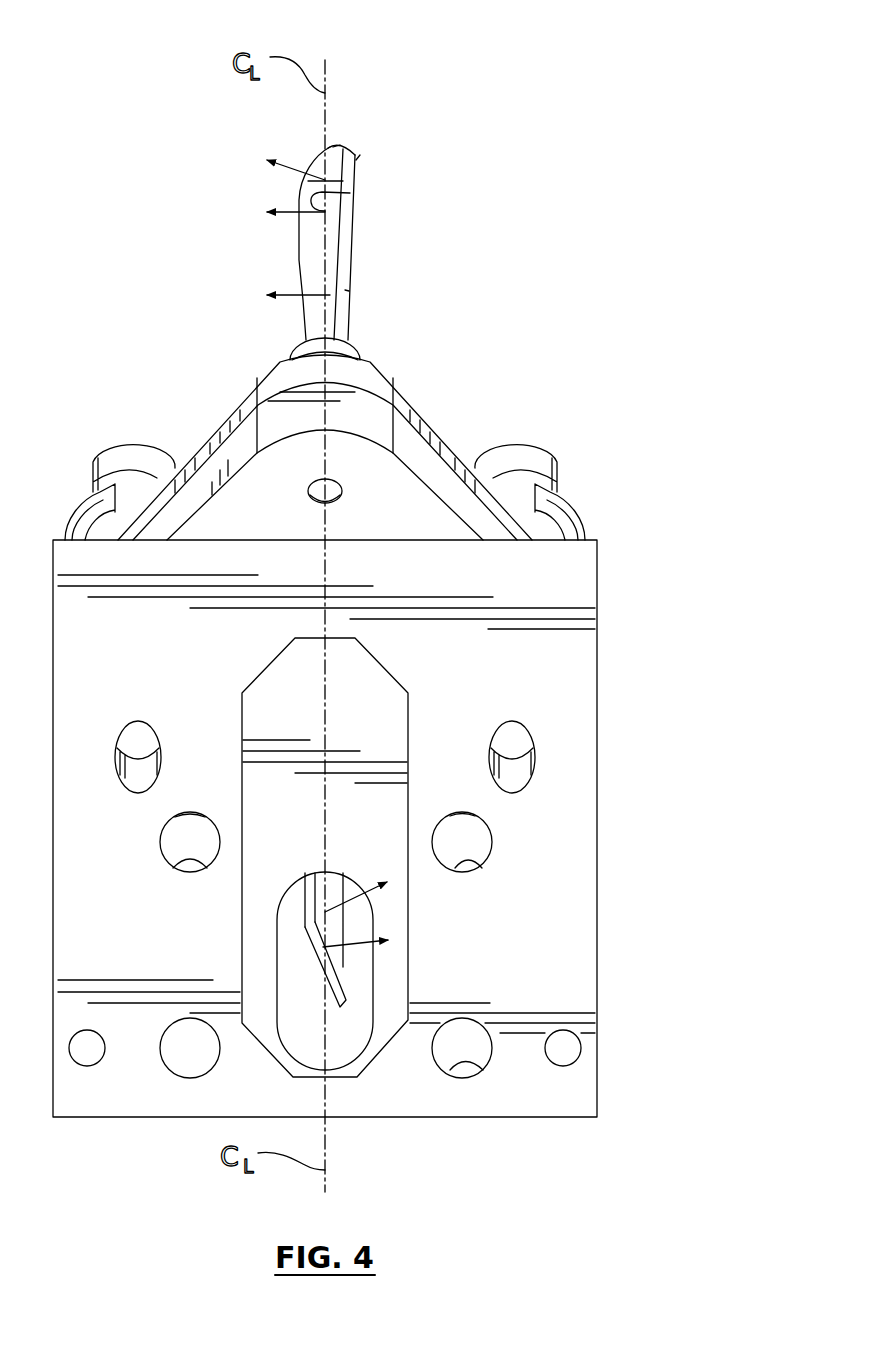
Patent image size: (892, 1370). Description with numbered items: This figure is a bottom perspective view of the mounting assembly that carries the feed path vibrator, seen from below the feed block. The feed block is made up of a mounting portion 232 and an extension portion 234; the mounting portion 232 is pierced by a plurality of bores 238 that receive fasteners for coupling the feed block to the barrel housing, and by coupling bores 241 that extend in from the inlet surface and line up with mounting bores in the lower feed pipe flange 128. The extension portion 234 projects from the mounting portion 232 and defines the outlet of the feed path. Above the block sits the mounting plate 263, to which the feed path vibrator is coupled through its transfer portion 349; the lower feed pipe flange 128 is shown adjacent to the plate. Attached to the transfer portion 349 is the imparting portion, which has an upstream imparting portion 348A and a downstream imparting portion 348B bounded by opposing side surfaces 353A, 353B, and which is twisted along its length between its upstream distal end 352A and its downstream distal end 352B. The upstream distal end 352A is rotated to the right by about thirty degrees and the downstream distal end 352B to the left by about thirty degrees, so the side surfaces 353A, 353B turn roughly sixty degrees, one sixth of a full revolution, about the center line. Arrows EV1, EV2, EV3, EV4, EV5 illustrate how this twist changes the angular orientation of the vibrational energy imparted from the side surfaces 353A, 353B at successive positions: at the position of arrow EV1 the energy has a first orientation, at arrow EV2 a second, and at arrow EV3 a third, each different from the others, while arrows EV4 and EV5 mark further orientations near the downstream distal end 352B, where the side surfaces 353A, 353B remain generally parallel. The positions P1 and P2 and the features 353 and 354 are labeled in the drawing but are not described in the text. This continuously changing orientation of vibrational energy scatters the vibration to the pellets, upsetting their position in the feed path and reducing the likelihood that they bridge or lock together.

The upstream distal end 352A is at (336, 146).
The first point P1 is at (360, 155).
The pin cap 354 is at (350, 181).
The pin hook feature 353 is at (350, 193).
The upstream imparting portion 348A is at (348, 231).
The second point P2 is at (345, 290).
The side surface 353B is at (305, 323).
The transfer portion 349 is at (430, 421).
The mounting plate 263 is at (503, 470).
The lower feed pipe flange 128 is at (573, 517).
The mounting portion 232 is at (597, 630).
The coupling bores 241 is at (520, 770).
The downstream imparting portion 348B is at (305, 918).
The downstream distal end 352B is at (313, 961).
The extension portion 234 is at (410, 990).
The bores 238 is at (457, 1060).
The side surface 353A is at (340, 963).
The arrow EV1 is at (266, 160).
The arrow EV2 is at (266, 212).
The arrow EV3 is at (268, 297).
The arrow EV4 is at (376, 882).
The arrow EV5 is at (382, 944).